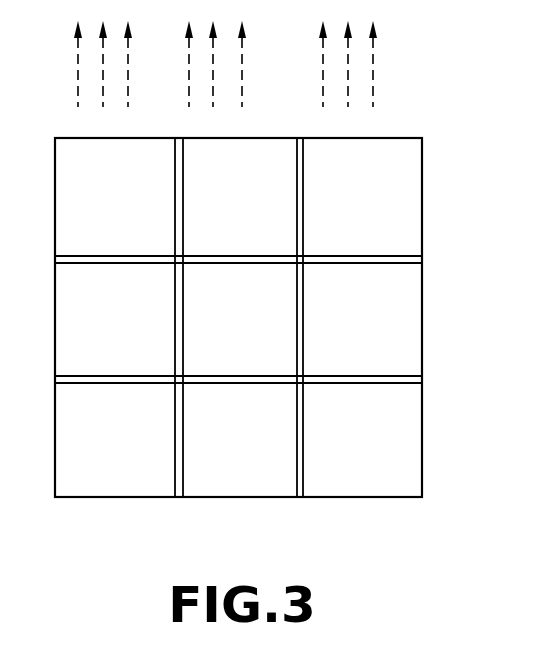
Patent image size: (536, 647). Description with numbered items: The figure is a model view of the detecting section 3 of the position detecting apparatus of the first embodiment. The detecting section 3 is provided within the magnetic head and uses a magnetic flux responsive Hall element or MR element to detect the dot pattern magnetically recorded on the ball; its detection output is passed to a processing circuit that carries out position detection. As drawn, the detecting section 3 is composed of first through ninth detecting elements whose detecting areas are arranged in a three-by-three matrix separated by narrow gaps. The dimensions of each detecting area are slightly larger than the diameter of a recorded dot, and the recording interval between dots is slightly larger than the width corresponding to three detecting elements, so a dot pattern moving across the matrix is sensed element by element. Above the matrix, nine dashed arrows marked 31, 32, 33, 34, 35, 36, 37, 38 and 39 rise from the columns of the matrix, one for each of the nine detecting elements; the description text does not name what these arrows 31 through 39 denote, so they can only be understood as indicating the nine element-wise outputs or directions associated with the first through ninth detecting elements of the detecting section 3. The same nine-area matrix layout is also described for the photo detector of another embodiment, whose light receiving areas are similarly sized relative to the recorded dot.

The detecting section 3 is at (418, 108).
The light beam / output of detector D1 31 is at (74, 77).
The light beam / output of detector D2 32 is at (99, 77).
The light beam / output of detector D3 33 is at (124, 77).
The light beam / output of detector D4 34 is at (185, 77).
The light beam / output of detector D5 35 is at (210, 77).
The light beam / output of detector D6 36 is at (238, 77).
The light beam / output of detector D7 37 is at (320, 77).
The light beam / output of detector D8 38 is at (345, 77).
The light beam / output of detector D9 39 is at (370, 77).